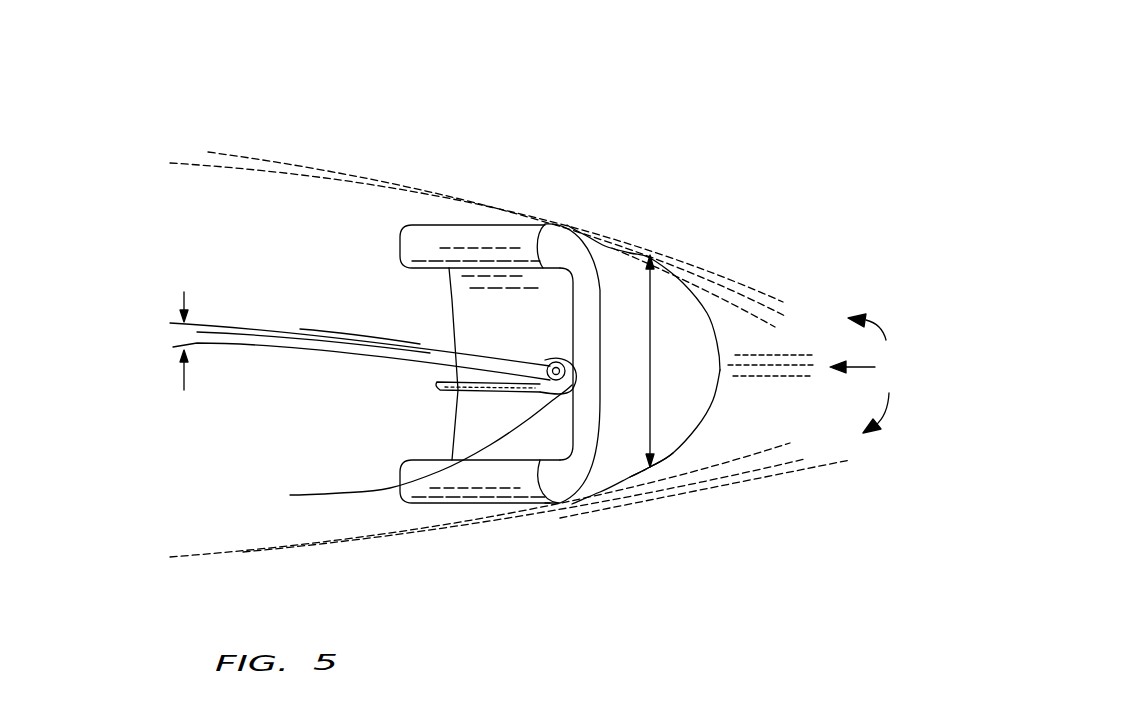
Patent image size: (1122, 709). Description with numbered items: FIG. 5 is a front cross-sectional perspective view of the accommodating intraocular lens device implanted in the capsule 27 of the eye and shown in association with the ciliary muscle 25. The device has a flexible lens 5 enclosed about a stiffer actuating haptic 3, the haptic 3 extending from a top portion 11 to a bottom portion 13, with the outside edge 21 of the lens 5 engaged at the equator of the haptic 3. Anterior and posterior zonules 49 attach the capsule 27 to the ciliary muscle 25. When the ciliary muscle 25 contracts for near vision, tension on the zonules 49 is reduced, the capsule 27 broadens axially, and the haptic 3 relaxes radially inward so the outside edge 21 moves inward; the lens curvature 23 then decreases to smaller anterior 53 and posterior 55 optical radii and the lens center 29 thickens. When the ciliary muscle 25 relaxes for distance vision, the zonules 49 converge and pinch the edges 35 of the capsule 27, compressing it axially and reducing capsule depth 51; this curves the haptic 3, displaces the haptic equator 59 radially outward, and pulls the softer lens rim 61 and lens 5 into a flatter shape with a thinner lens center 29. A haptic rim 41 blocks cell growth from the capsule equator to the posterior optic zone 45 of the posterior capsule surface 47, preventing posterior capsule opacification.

The haptic 3 is at (488, 245).
The lens 5 is at (360, 315).
The top portion 11 is at (480, 189).
The bottom portion 13 is at (477, 480).
The outside edge 21 is at (560, 368).
The lens curvature 23 is at (361, 395).
The ciliary muscle 25 is at (747, 323).
The capsule 27 is at (683, 300).
The lens center 29 is at (205, 383).
The edges of the capsule surface 35 is at (565, 230).
The haptic rim 41 is at (590, 252).
The posterior optic zone 45 is at (613, 486).
The posterior capsule surface 47 is at (708, 395).
The zonules 49 is at (871, 373).
The capsule depth 51 is at (650, 410).
The anterior lens optical radius 53 is at (372, 350).
The posterior lens optical radius 55 is at (372, 350).
The equator of the haptic 59 is at (411, 446).
The lens rim 61 is at (184, 292).